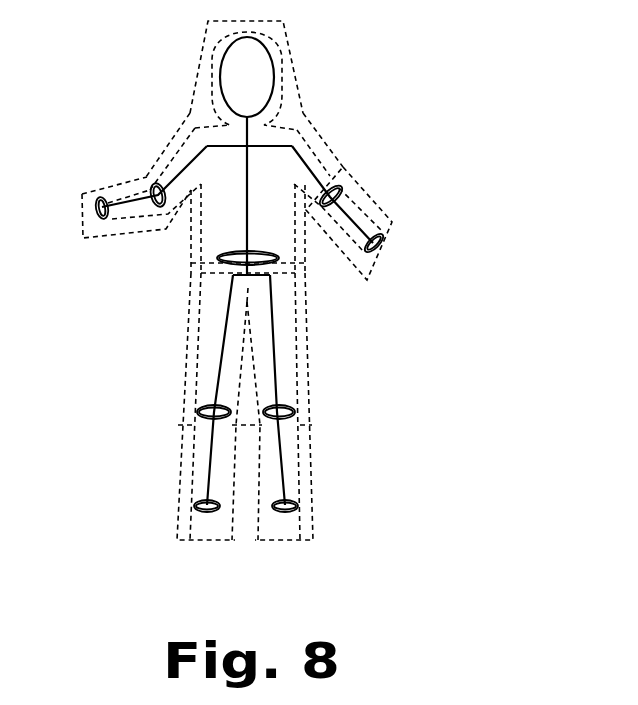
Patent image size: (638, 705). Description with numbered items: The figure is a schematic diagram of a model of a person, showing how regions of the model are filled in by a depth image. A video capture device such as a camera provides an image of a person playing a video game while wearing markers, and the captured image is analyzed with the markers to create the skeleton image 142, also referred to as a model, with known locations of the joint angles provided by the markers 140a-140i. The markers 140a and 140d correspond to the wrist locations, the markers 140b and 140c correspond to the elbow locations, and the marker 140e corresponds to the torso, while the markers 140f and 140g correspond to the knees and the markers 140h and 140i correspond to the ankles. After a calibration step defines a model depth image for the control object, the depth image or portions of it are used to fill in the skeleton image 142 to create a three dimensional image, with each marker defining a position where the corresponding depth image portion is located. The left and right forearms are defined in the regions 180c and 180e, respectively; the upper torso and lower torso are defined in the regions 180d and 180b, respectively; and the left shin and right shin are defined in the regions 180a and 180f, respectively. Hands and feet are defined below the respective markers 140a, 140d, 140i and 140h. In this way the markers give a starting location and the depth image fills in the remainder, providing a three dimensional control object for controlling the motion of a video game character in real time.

The marker 140a is at (383, 233).
The marker 140b is at (338, 186).
The marker 140c is at (152, 184).
The marker 140d is at (100, 198).
The marker 140e is at (280, 265).
The marker 140f is at (198, 412).
The marker 140g is at (295, 411).
The marker 140h is at (196, 504).
The marker 140i is at (295, 504).
The skeleton image 142 is at (276, 365).
The region 180a is at (295, 545).
The region 180b is at (309, 348).
The region 180c is at (372, 282).
The region 180d is at (289, 47).
The region 180e is at (107, 240).
The region 180f is at (198, 545).